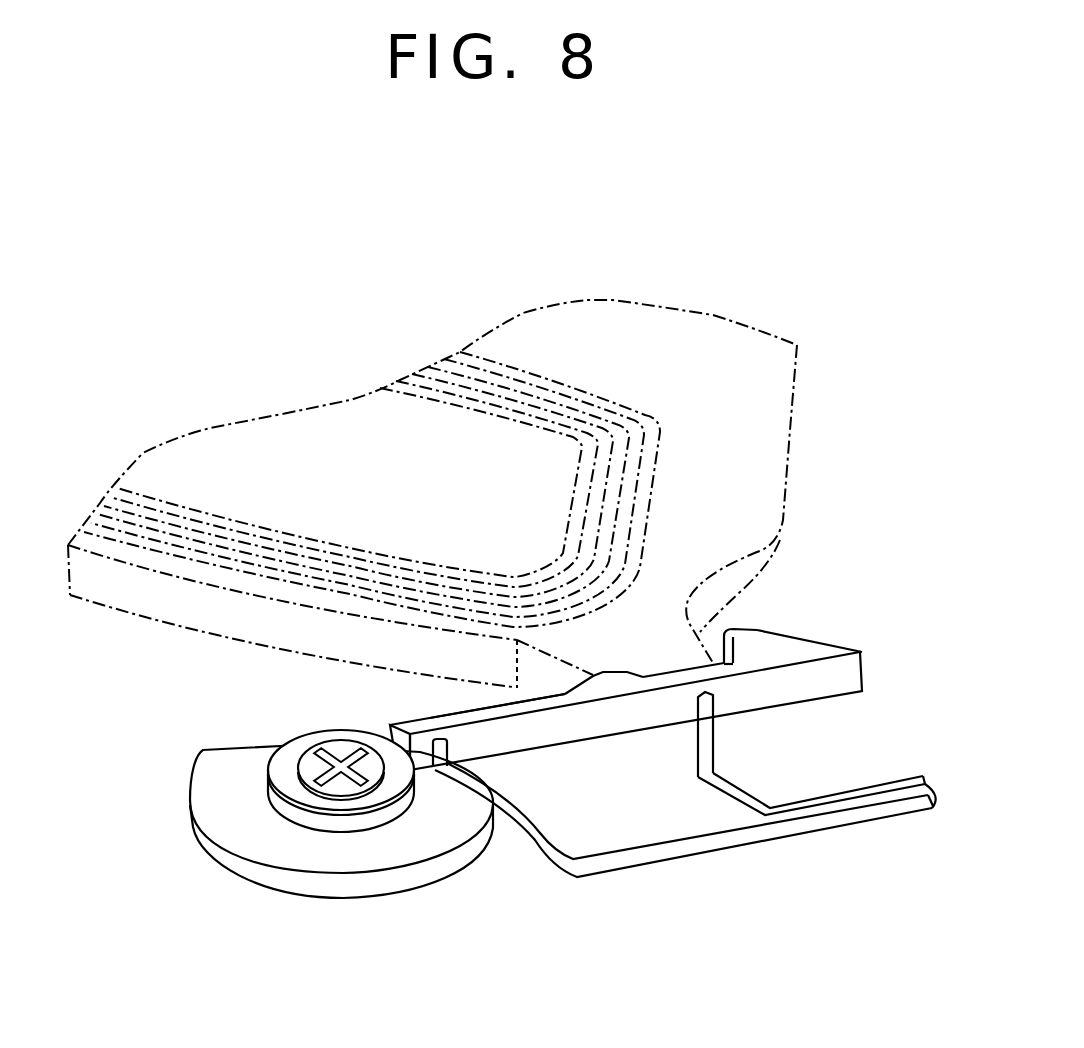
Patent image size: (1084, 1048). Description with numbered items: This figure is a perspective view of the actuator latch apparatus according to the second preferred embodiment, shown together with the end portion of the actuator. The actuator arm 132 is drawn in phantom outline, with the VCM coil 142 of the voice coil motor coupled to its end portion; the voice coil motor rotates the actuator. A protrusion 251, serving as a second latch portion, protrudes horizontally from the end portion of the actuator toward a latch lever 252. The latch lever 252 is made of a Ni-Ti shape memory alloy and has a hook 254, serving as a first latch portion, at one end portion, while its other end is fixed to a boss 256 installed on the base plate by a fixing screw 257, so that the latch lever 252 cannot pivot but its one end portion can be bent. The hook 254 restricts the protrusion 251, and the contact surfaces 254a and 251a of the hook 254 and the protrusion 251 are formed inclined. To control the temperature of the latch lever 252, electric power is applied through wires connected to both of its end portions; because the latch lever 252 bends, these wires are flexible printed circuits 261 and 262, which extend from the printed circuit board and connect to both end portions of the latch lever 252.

The actuator arm 132 is at (172, 599).
The VCM coil 142 is at (295, 565).
The protrusion 251 is at (647, 643).
The contact surface 251a is at (542, 662).
The latch lever 252 is at (547, 700).
The hook 254 is at (752, 645).
The contact surface 254a is at (807, 638).
The boss 256 is at (380, 880).
The fixing screw 257 is at (310, 787).
The flexible printed circuit 261 is at (818, 803).
The flexible printed circuit 262 is at (875, 810).